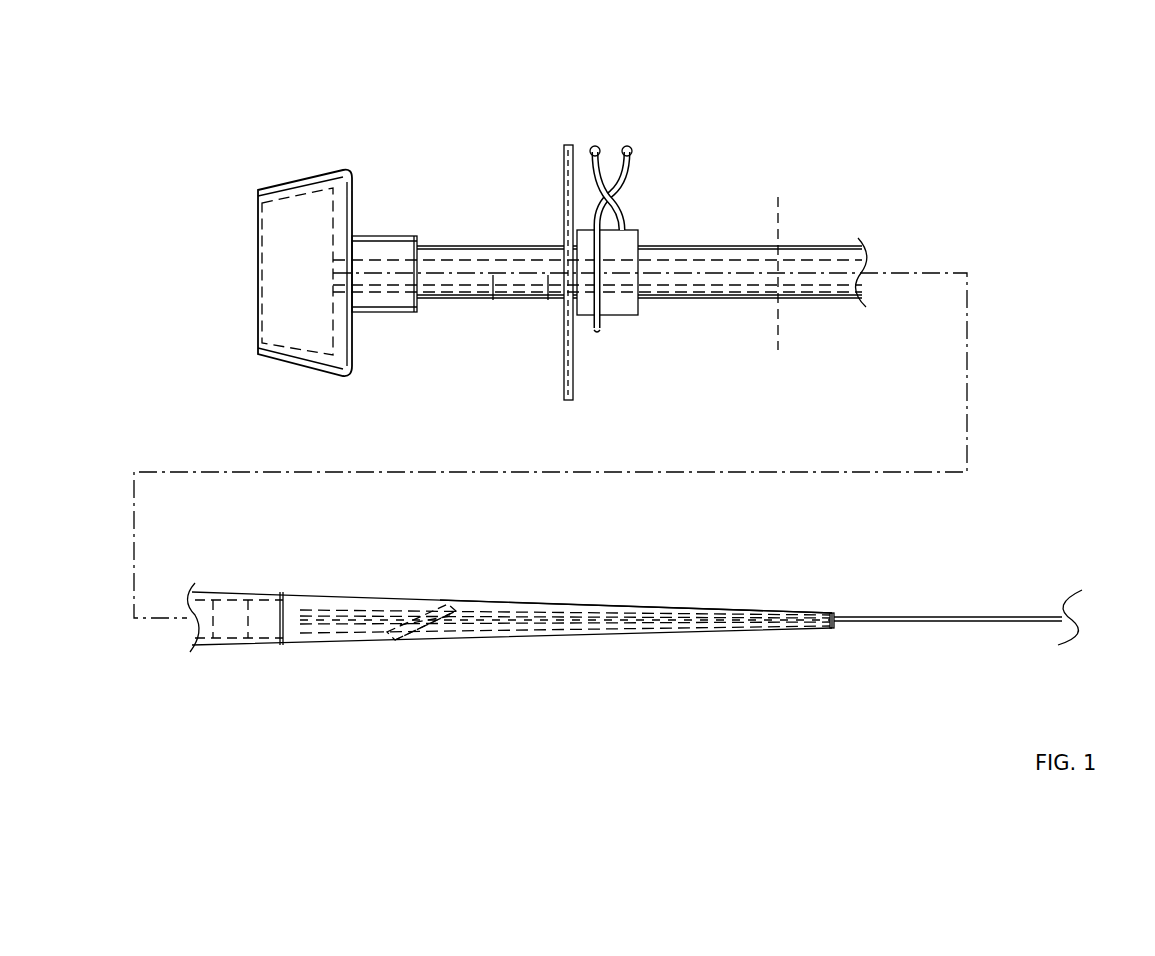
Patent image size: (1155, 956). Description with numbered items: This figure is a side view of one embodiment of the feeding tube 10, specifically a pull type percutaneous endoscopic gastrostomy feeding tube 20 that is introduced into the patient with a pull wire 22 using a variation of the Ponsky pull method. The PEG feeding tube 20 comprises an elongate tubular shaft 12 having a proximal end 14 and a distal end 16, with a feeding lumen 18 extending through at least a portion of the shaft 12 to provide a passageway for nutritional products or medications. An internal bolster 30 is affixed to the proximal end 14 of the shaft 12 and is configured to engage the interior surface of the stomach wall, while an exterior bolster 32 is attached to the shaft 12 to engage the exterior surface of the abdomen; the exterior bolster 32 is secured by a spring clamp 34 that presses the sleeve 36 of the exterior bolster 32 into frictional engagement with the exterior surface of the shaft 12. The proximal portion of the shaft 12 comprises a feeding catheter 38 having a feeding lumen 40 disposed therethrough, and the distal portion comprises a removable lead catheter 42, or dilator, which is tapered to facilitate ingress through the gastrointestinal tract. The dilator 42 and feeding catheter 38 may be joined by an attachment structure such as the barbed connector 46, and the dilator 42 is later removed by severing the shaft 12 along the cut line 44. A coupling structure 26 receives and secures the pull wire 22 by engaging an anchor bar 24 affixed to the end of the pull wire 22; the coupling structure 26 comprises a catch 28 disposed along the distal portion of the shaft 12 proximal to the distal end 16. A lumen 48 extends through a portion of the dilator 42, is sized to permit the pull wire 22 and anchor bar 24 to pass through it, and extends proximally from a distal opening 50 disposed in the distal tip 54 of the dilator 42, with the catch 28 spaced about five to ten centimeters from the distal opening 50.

The feeding tube 10 is at (700, 130).
The elongate tubular shaft 12 is at (820, 252).
The proximal end 14 is at (482, 246).
The distal end 16 is at (477, 635).
The feeding lumen 18 is at (493, 300).
The PEG feeding tube 20 is at (750, 173).
The pull wire 22 is at (493, 600).
The anchor bar 24 is at (410, 607).
The coupling structure 26 is at (395, 662).
The catch 28 is at (440, 635).
The internal bolster 30 is at (345, 170).
The exterior bolster 32 is at (568, 147).
The spring clamp 34 is at (598, 330).
The sleeve 36 is at (640, 314).
The feeding catheter 38 is at (440, 300).
The feeding lumen 40 is at (548, 300).
The lead catheter 42 is at (550, 605).
The cut line 44 is at (778, 330).
The barbed connector 46 is at (230, 642).
The lumen 48 is at (638, 610).
The distal opening 50 is at (835, 617).
The distal tip 54 is at (825, 630).